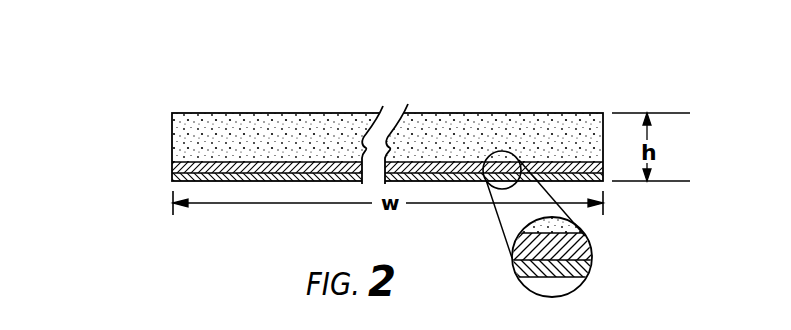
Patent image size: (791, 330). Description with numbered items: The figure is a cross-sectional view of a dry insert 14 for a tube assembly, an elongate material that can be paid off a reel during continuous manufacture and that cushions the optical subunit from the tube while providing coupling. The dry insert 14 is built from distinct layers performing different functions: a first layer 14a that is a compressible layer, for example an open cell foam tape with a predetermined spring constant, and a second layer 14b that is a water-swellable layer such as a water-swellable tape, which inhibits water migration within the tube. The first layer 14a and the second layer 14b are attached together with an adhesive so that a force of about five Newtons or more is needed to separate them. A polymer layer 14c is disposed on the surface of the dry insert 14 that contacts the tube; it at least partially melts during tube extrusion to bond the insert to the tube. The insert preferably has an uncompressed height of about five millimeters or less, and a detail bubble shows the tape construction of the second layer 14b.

The dry insert 14 is at (207, 112).
The first layer 14a is at (190, 143).
The second layer 14b is at (173, 164).
The polymer layer 14c is at (580, 267).